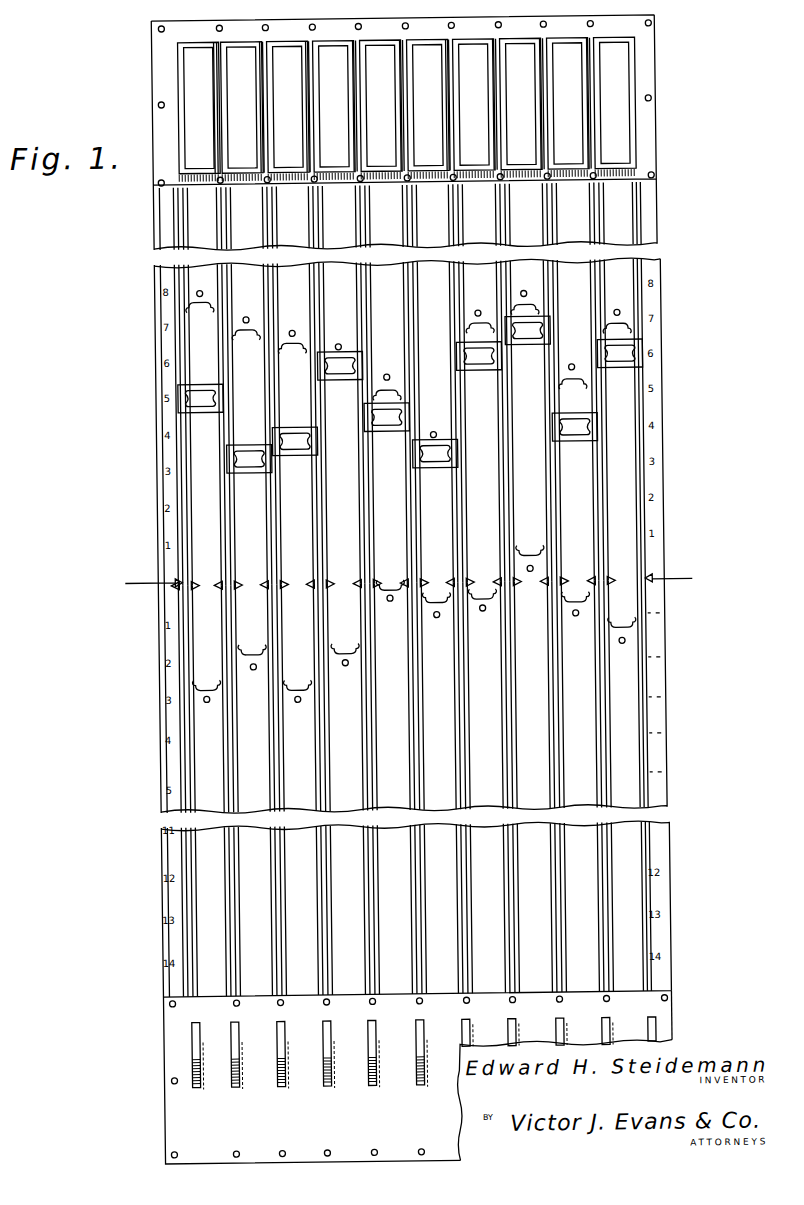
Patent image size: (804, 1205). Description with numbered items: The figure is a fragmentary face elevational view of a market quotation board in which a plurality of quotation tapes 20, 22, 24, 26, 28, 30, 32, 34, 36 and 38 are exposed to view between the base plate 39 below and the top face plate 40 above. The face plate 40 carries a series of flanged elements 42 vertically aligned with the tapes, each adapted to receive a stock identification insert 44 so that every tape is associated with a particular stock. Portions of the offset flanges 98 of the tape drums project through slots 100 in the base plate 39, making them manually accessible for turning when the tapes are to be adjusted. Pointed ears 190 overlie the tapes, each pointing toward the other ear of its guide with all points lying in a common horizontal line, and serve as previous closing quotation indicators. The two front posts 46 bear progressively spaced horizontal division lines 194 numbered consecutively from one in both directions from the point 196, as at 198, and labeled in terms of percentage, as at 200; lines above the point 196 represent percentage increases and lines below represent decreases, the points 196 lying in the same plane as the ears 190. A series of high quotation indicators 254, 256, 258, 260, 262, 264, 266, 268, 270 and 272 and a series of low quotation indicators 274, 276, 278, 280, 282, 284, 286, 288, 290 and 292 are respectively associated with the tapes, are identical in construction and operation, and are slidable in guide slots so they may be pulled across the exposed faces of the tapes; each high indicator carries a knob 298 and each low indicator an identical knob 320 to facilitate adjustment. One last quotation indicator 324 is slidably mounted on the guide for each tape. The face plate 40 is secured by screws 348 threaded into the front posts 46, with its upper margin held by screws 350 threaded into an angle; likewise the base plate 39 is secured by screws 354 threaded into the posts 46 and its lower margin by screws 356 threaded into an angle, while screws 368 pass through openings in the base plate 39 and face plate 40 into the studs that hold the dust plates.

The quotation tape 20 is at (194, 490).
The quotation tape 22 is at (238, 526).
The quotation tape 24 is at (294, 493).
The quotation tape 26 is at (338, 534).
The quotation tape 28 is at (394, 508).
The quotation tape 30 is at (431, 528).
The quotation tape 32 is at (511, 467).
The quotation tape 34 is at (594, 460).
The quotation tape 36 is at (594, 478).
The quotation tape 38 is at (614, 506).
The base plate 39 is at (656, 998).
The top face plate 40 is at (646, 173).
The flanged element 42 is at (254, 63).
The stock identification insert 44 is at (183, 120).
The front post 46 is at (174, 457).
The offset flange 98 is at (222, 1078).
The slot 100 is at (225, 1025).
The pointed ear 190 is at (280, 582).
The division line 194 is at (648, 738).
The point 196 is at (407, 581).
The numbering of division lines 198 is at (648, 656).
The percentage label 200 is at (160, 200).
The high quotation indicator 254 is at (192, 225).
The high quotation indicator 256 is at (242, 238).
The high quotation indicator 258 is at (290, 276).
The high quotation indicator 260 is at (336, 302).
The high quotation indicator 262 is at (382, 278).
The high quotation indicator 264 is at (423, 303).
The high quotation indicator 266 is at (468, 283).
The high quotation indicator 268 is at (507, 278).
The high quotation indicator 270 is at (565, 280).
The high quotation indicator 272 is at (652, 276).
The low quotation indicator 274 is at (200, 778).
The low quotation indicator 276 is at (239, 743).
The low quotation indicator 278 is at (284, 714).
The low quotation indicator 280 is at (334, 742).
The low quotation indicator 282 is at (378, 713).
The low quotation indicator 284 is at (421, 745).
The low quotation indicator 286 is at (466, 716).
The low quotation indicator 288 is at (518, 740).
The low quotation indicator 290 is at (568, 709).
The low quotation indicator 292 is at (611, 740).
The knob 298 is at (239, 323).
The knob 320 is at (523, 572).
The last quotation indicator 324 is at (180, 399).
The screw 348 is at (157, 107).
The screw 350 is at (651, 36).
The screw 354 is at (157, 1005).
The screw 356 is at (222, 1155).
The screw 368 is at (265, 187).